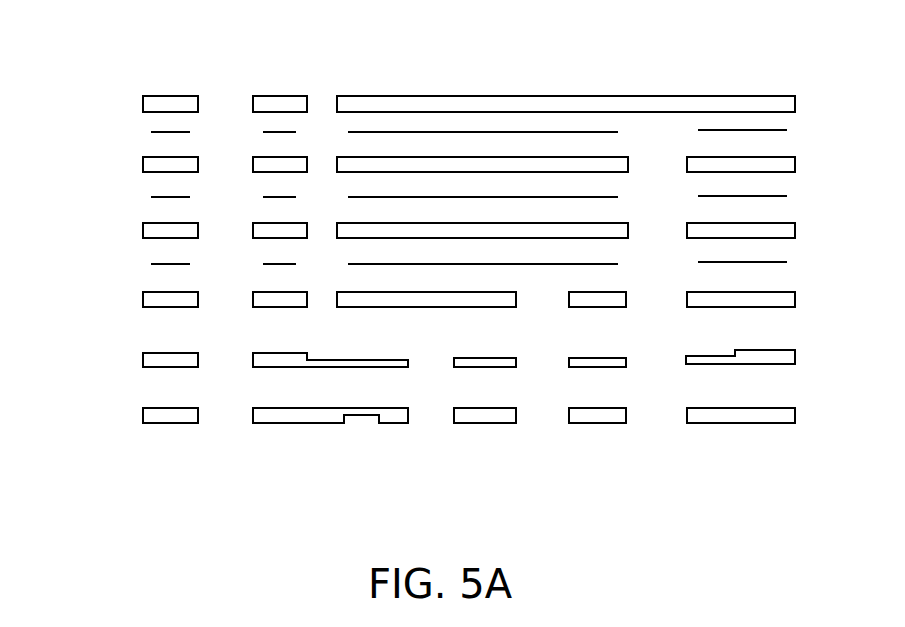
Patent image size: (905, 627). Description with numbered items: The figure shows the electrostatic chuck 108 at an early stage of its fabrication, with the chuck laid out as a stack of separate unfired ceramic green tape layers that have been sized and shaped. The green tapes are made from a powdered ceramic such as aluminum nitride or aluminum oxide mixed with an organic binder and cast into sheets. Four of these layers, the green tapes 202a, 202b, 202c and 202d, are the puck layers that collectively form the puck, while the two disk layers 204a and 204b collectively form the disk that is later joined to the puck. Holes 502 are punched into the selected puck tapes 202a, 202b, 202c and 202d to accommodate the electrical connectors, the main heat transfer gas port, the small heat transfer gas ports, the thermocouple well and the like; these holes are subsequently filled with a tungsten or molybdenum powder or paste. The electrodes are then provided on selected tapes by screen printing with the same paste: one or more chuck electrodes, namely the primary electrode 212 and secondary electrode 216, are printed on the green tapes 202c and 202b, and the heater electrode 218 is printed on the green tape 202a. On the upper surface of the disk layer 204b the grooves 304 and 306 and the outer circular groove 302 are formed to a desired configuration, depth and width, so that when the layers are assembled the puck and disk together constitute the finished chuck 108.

The electrostatic chuck 108 is at (743, 56).
The green tape 202a is at (140, 300).
The green tape 202b is at (140, 232).
The green tape 202c is at (140, 165).
The green tape 202d is at (140, 105).
The disk layer 204a is at (140, 416).
The disk layer 204b is at (140, 362).
The primary electrode 212 is at (770, 129).
The secondary electrode 216 is at (770, 196).
The heater electrode 218 is at (770, 263).
The outer circular groove 302 is at (712, 355).
The groove 304 is at (513, 344).
The groove 306 is at (597, 362).
The holes 502 is at (321, 103).